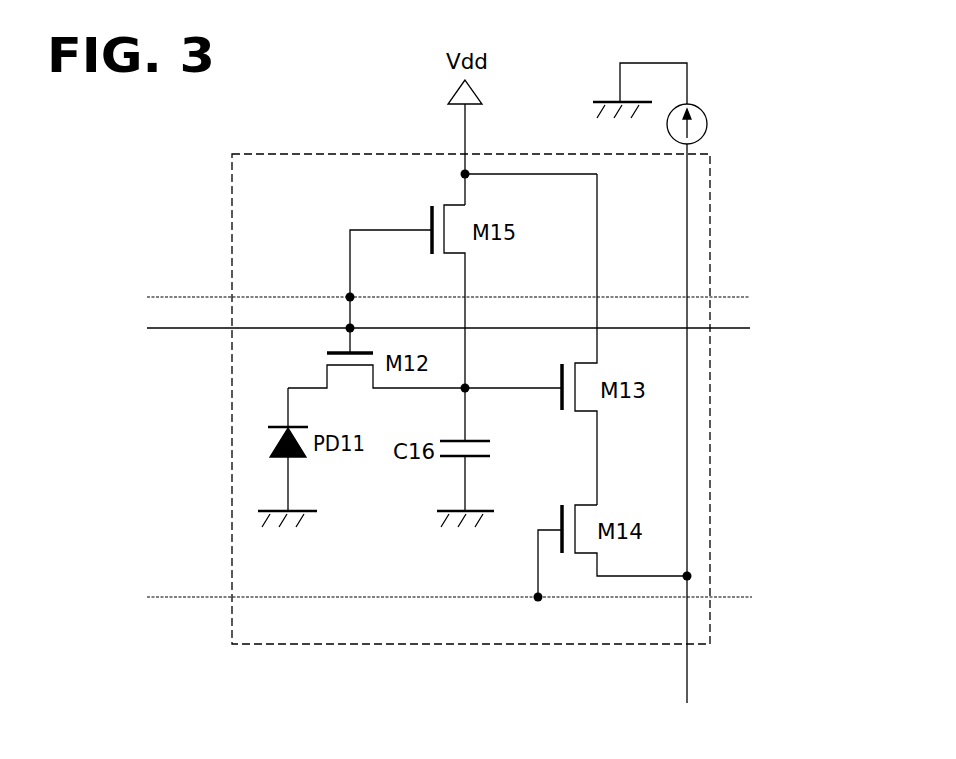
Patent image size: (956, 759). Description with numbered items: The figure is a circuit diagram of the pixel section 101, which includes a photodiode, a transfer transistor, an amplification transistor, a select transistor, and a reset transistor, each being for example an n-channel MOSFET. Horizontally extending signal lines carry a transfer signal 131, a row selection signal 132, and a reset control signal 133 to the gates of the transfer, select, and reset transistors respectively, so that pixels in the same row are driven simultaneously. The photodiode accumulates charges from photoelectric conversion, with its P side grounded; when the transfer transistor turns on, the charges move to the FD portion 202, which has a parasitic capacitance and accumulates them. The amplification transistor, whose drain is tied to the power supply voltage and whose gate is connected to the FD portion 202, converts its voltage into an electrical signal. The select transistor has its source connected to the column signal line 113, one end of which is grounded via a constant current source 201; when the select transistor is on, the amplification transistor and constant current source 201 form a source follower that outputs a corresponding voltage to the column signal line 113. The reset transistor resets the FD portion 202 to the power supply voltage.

The pixel section 101 is at (308, 153).
The constant current source 201 is at (708, 125).
The reset control signal 133 is at (448, 283).
The transfer signal 131 is at (448, 344).
The row selection signal 132 is at (449, 583).
The FD portion 202 is at (468, 392).
The column signal line 113 is at (688, 656).